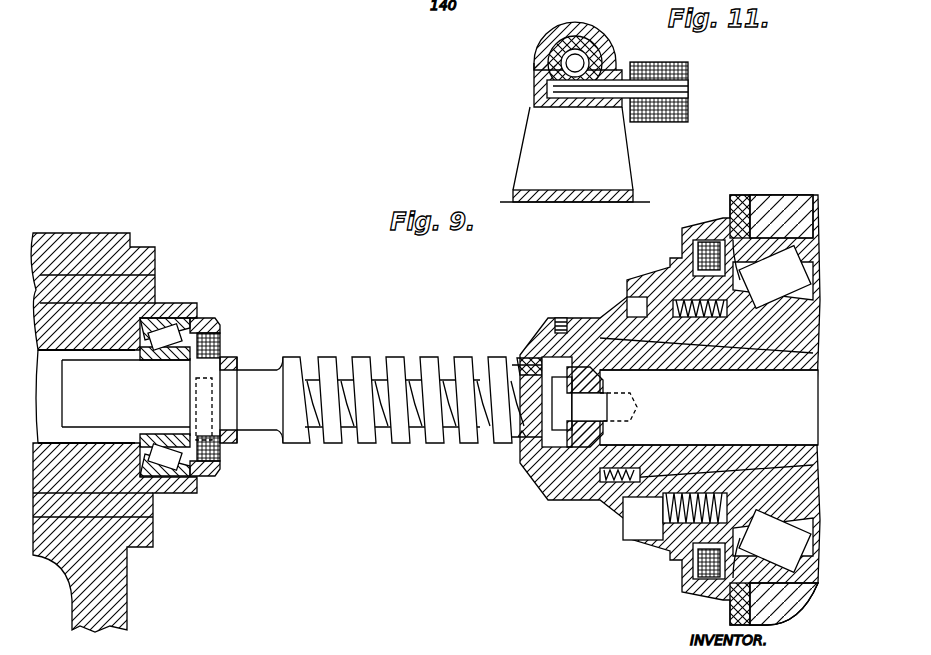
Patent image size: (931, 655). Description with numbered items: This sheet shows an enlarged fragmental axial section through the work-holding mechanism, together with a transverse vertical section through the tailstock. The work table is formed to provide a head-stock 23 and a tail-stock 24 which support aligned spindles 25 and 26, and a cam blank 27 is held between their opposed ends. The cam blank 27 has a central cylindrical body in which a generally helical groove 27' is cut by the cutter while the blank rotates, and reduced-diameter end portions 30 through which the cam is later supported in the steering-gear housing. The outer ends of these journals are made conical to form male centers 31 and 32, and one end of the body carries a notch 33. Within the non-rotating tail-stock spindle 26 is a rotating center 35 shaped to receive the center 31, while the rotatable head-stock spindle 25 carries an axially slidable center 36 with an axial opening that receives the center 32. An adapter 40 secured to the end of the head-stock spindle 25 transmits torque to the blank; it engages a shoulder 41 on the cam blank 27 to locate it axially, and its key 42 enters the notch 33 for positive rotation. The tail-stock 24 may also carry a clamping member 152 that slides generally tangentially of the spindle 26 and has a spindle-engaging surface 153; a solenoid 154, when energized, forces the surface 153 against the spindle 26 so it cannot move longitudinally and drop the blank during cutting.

In FIG. 9, the head-stock 23 is at (778, 195).
In FIG. 11, the tail-stock 24 is at (535, 43).
In FIG. 9, the tail-stock 24 is at (68, 233).
In FIG. 9, the head-stock spindle 25 is at (663, 535).
In FIG. 11, the tail-stock spindle 26 is at (548, 60).
In FIG. 9, the tail-stock spindle 26 is at (183, 303).
In FIG. 9, the cam blank 27 is at (403, 438).
In FIG. 9, the helical groove 27' is at (368, 480).
In FIG. 9, the reduced-diameter end portions 30 is at (258, 375).
In FIG. 9, the male center 31 is at (245, 430).
In FIG. 9, the male center 32 is at (603, 381).
In FIG. 9, the notch 33 is at (525, 356).
In FIG. 9, the rotating center 35 is at (113, 396).
In FIG. 9, the axially slidable center 36 is at (709, 407).
In FIG. 9, the adapter 40 is at (566, 309).
In FIG. 9, the shoulder 41 is at (518, 440).
In FIG. 9, the key 42 is at (533, 335).
In FIG. 11, the clamping member 152 is at (527, 108).
In FIG. 11, the spindle-engaging surface 153 is at (543, 77).
In FIG. 11, the solenoid 154 is at (675, 118).